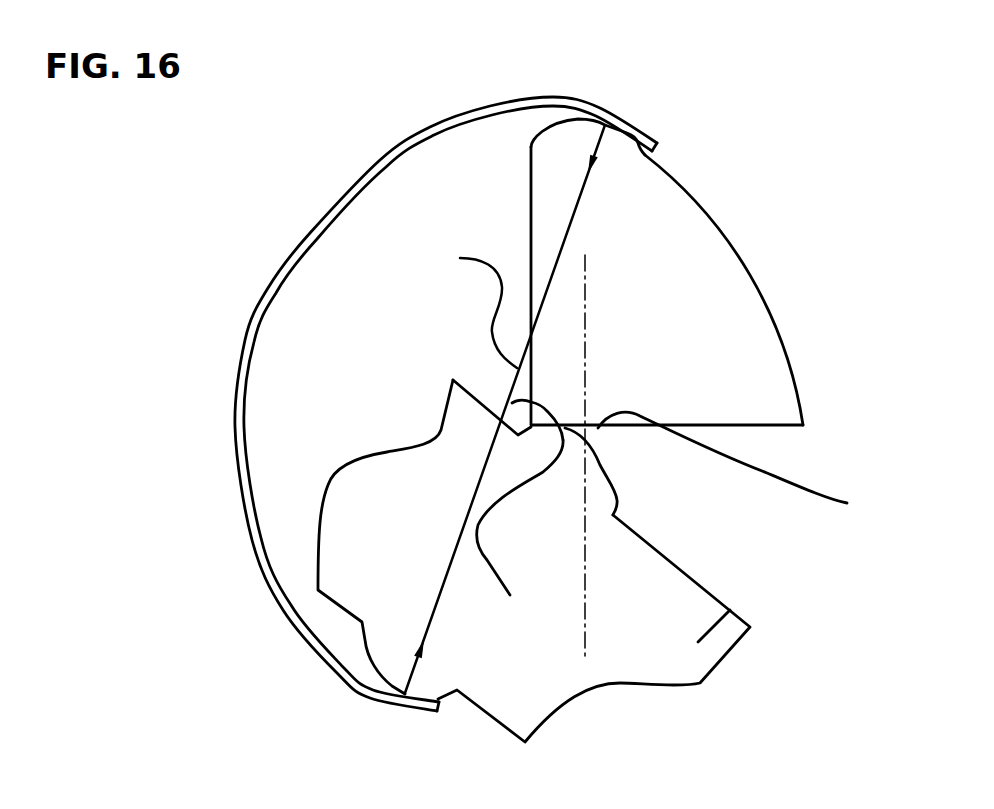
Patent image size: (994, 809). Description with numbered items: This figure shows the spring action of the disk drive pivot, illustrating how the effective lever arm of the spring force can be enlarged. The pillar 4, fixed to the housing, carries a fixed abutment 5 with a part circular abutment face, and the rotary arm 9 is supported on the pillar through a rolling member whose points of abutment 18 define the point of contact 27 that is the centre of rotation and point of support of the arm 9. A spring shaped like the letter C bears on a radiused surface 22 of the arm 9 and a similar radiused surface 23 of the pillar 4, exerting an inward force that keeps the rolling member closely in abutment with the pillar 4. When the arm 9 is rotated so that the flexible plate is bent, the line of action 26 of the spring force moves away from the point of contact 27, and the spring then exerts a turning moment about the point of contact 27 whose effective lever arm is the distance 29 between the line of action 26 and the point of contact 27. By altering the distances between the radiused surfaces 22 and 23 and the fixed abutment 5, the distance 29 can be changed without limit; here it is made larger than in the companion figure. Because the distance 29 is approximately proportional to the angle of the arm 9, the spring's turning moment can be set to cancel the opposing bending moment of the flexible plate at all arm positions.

The pillar 4 is at (712, 283).
The abutment 5 is at (737, 467).
The rotary arm 9 is at (730, 610).
The abutments 18 is at (620, 487).
The radiused surface 22 is at (350, 680).
The radiused surface 23 is at (537, 140).
The line of action 26 is at (468, 310).
The point of contact 27 is at (520, 533).
The distance 29 is at (538, 403).